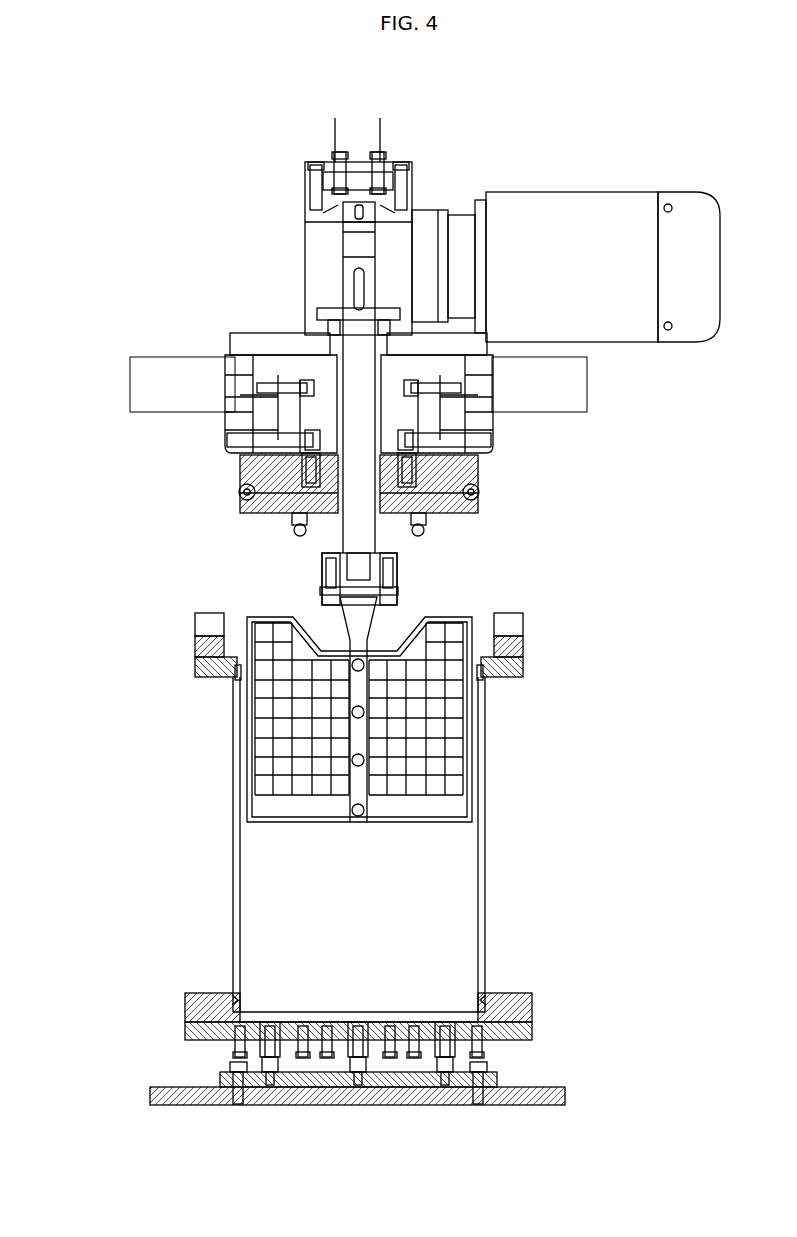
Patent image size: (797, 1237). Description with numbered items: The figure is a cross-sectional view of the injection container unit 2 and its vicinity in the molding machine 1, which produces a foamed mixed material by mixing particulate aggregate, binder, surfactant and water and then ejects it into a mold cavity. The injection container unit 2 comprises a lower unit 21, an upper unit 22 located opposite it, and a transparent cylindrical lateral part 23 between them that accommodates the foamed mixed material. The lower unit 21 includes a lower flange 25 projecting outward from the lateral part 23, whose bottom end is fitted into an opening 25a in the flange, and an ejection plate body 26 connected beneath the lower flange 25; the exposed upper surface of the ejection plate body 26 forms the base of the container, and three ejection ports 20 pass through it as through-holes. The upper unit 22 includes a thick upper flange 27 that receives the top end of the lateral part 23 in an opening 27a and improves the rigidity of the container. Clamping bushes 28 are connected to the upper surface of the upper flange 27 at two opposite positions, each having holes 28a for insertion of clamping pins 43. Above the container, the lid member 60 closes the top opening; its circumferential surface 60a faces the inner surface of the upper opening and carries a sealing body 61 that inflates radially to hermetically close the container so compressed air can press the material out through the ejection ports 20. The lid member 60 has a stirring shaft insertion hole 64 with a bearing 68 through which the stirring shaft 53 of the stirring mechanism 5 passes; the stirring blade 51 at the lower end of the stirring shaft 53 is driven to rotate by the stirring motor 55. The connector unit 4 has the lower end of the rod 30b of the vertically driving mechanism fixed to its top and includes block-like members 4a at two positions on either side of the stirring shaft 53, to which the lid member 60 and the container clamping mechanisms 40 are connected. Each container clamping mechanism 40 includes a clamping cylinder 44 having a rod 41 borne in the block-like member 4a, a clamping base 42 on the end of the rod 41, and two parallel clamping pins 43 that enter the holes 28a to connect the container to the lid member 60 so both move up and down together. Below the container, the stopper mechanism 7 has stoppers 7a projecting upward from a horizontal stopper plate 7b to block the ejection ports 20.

The molding machine 1 is at (117, 152).
The injection container unit 2 is at (64, 705).
The connector unit 4 is at (138, 319).
The block-like member 4a is at (228, 345).
The stirring mechanism 5 is at (763, 400).
The stopper mechanism 7 is at (462, 1160).
The stopper 7a is at (275, 1087).
The stopper plate 7b is at (318, 1087).
The ejection port 20 is at (245, 1048).
The lower unit 21 is at (133, 955).
The upper unit 22 is at (143, 608).
The lateral part 23 is at (236, 852).
The lower flange 25 is at (230, 1010).
The opening 25a is at (238, 1000).
The ejection plate body 26 is at (248, 1030).
The upper flange 27 is at (210, 668).
The opening 27a is at (236, 676).
The clamping bush 28 is at (206, 648).
The hole 28a is at (210, 634).
The rod 30b is at (376, 133).
The container clamping mechanism 40 is at (58, 345).
The rod 41 is at (286, 415).
The clamping base 42 is at (228, 410).
The clamping pin 43 is at (236, 440).
The clamping cylinder 44 is at (236, 387).
The stirring blade 51 is at (470, 622).
The stirring shaft 53 is at (367, 342).
The stirring motor 55 is at (622, 323).
The lid member 60 is at (146, 522).
The circumferential surface 60a is at (246, 468).
The sealing body 61 is at (243, 497).
The stirring shaft insertion hole 64 is at (310, 514).
The bearing 68 is at (393, 514).